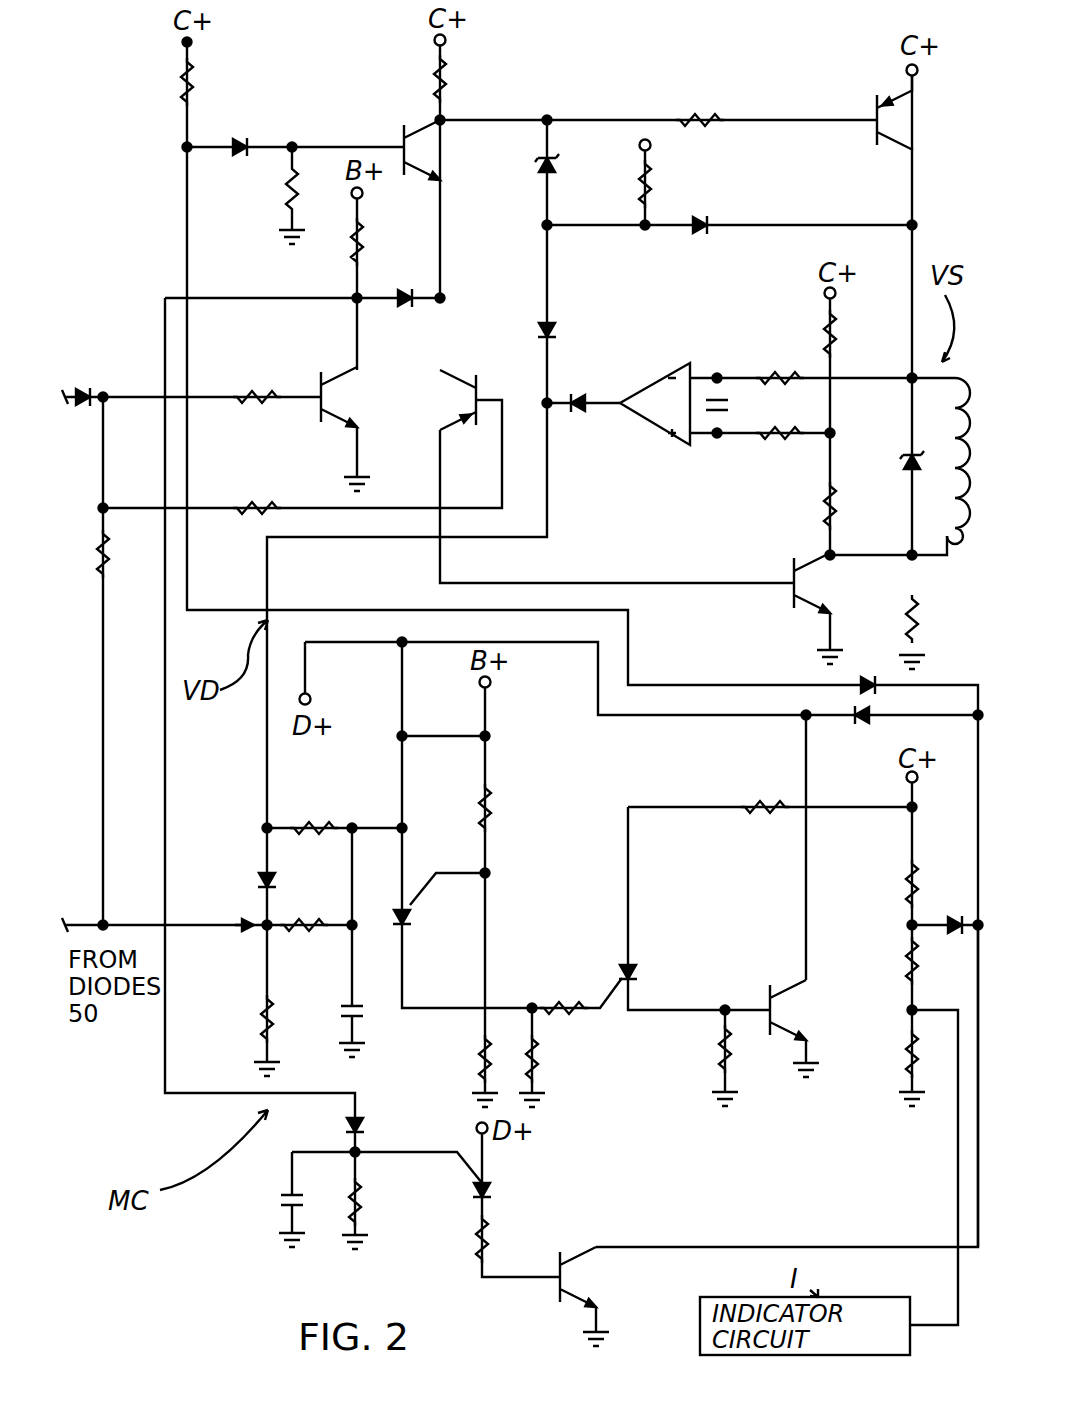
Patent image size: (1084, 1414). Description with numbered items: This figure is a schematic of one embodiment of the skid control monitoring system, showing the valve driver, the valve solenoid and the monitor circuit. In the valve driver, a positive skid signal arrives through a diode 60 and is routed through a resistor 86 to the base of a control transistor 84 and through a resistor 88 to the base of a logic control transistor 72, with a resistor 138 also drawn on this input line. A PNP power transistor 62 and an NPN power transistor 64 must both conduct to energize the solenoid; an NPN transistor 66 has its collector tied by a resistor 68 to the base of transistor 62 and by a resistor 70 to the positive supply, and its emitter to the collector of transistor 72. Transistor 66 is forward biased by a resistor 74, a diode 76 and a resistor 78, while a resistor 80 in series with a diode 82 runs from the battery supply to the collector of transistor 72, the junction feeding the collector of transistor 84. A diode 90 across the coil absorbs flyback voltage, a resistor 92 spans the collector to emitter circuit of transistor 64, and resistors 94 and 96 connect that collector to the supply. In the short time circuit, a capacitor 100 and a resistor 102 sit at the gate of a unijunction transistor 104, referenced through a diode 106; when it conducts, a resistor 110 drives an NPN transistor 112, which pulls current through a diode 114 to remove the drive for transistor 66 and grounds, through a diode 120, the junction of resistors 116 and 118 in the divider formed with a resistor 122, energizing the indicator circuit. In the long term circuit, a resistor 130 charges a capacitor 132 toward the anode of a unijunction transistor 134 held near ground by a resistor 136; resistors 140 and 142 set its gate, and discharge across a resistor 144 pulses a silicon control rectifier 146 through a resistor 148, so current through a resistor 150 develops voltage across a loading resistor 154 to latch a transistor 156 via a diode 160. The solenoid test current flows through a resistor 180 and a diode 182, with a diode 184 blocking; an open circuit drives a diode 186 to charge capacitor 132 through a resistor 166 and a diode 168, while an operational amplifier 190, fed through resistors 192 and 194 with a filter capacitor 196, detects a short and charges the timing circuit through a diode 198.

The diode 60 is at (88, 388).
The PNP power transistor 62 is at (895, 124).
The NPN power transistor 64 is at (816, 591).
The NPN transistor 66 is at (434, 154).
The resistor 68 is at (700, 114).
The resistor 70 is at (448, 82).
The logic control transistor 72 is at (459, 392).
The resistor 74 is at (194, 80).
The diode 76 is at (243, 133).
The resistor 78 is at (286, 186).
The resistor 80 is at (362, 244).
The diode 82 is at (405, 310).
The control transistor 84 is at (340, 405).
The resistor 86 is at (270, 376).
The resistor 88 is at (275, 488).
The diode 90 is at (904, 455).
The resistor 92 is at (919, 613).
The resistor 94 is at (838, 508).
The resistor 96 is at (838, 336).
The capacitor 100 is at (284, 1198).
The resistor 102 is at (364, 1198).
The unijunction transistor 104 is at (492, 1192).
The diode 106 is at (366, 1127).
The resistor 110 is at (476, 1240).
The NPN transistor 112 is at (584, 1284).
The diode 114 is at (876, 692).
The resistor 116 is at (906, 1058).
The resistor 118 is at (905, 962).
The diode 120 is at (952, 915).
The resistor 122 is at (905, 887).
The resistor 130 is at (308, 920).
The capacitor 132 is at (338, 1010).
The unijunction transistor 134 is at (406, 928).
The resistor 136 is at (262, 1018).
The resistor 138 is at (108, 574).
The resistor 140 is at (480, 1045).
The resistor 142 is at (492, 808).
The resistor 144 is at (538, 1056).
The silicon control rectifier 146 is at (640, 972).
The resistor 148 is at (565, 1004).
The resistor 150 is at (778, 790).
The loading resistor 154 is at (720, 1055).
The transistor 156 is at (792, 1016).
The diode 160 is at (857, 727).
The resistor 166 is at (330, 812).
The diode 168 is at (258, 880).
The resistor 180 is at (652, 186).
The diode 182 is at (706, 234).
The diode 184 is at (555, 160).
The diode 186 is at (540, 330).
The operational amplifier 190 is at (660, 382).
The resistor 192 is at (778, 372).
The resistor 194 is at (778, 442).
The capacitor 196 is at (730, 405).
The diode 198 is at (580, 392).